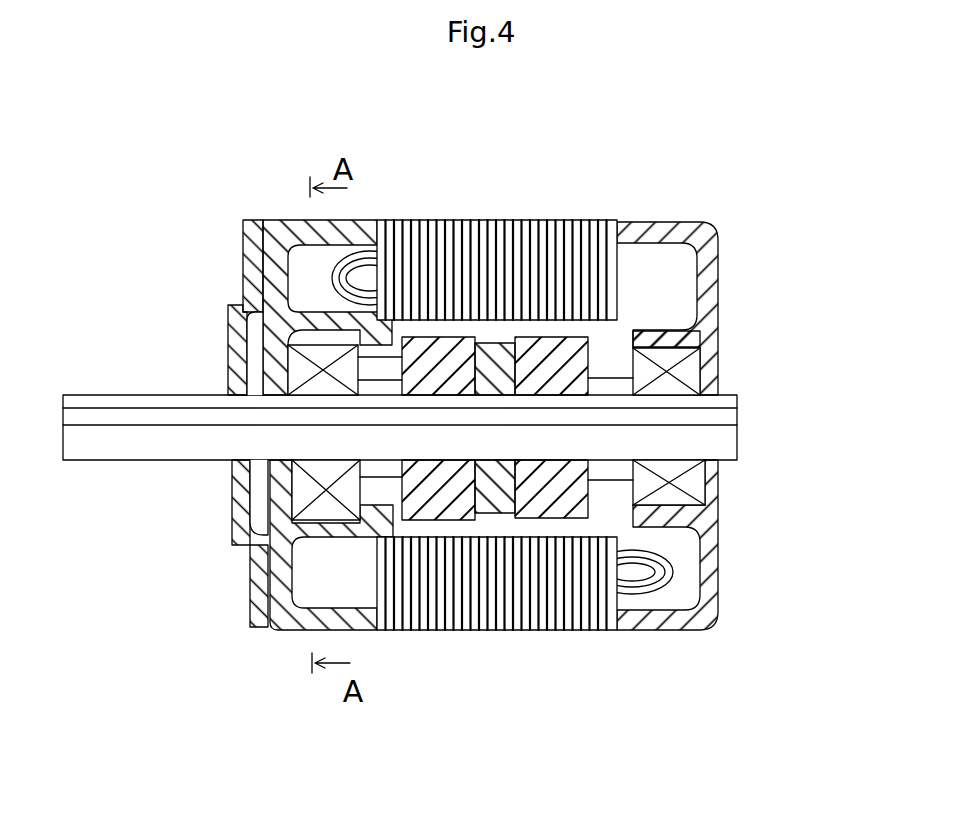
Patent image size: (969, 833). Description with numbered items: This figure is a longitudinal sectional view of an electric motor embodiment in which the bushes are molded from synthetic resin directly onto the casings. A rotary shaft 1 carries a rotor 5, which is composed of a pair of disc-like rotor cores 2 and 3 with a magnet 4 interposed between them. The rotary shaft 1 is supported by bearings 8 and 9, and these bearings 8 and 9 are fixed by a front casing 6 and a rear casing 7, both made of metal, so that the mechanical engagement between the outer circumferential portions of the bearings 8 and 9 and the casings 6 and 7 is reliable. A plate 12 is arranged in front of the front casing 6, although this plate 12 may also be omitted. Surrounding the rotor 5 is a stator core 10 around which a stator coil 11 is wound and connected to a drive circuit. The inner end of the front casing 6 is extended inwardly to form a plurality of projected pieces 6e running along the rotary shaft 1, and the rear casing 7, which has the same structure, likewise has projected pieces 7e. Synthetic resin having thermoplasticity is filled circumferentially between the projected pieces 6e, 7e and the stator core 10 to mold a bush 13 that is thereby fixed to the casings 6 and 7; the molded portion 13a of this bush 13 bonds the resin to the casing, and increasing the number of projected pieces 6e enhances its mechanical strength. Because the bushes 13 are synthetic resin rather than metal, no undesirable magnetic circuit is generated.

The rotary shaft 1 is at (98, 394).
The rotor core 2 is at (242, 344).
The rotor core 3 is at (595, 350).
The magnet 4 is at (505, 355).
The rotor 5 is at (573, 324).
The front casing 6 is at (293, 222).
The projected piece 6e is at (258, 330).
The rear casing 7 is at (707, 238).
The projected piece 7e is at (687, 340).
The bearing 8 is at (300, 373).
The bearing 9 is at (687, 377).
The stator core 10 is at (481, 268).
The stator coil 11 is at (350, 226).
The plate 12 is at (243, 228).
The bush 13 is at (262, 292).
The bearing holder flange 13a is at (380, 313).